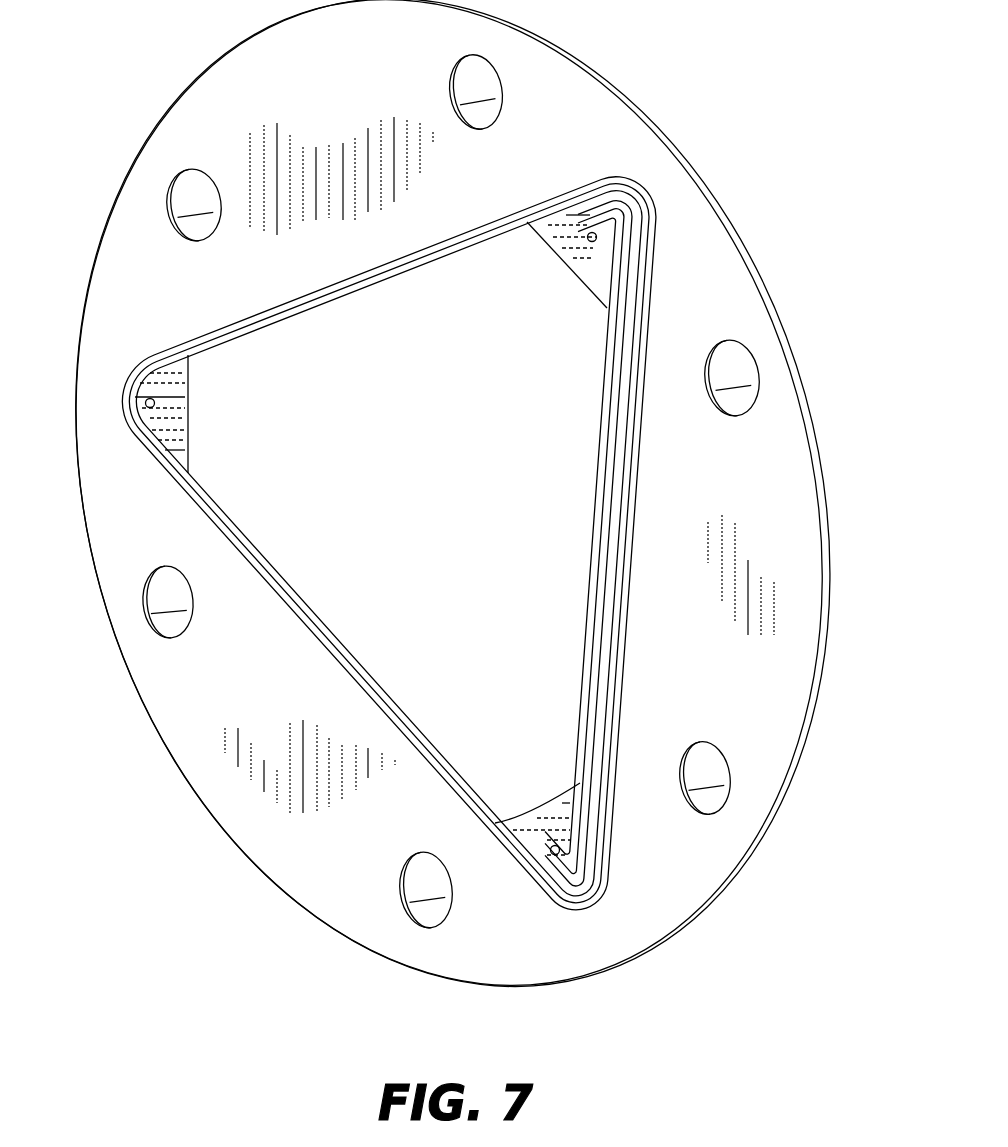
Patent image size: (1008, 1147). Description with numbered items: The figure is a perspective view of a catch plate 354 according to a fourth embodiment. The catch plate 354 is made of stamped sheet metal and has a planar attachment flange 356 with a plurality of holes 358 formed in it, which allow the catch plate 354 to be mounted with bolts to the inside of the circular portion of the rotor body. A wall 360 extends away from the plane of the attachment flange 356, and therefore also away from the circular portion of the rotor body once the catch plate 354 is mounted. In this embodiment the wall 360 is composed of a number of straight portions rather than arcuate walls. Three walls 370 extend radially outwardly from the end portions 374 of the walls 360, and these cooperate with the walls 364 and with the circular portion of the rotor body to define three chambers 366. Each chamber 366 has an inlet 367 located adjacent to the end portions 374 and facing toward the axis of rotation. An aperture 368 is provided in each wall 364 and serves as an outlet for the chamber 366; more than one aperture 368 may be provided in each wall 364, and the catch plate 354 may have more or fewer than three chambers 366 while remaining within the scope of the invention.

The catch plate 354 is at (726, 110).
The planar attachment flange 356 is at (734, 292).
The holes 358 is at (452, 491).
The wall 360 is at (340, 284).
The walls 364 is at (580, 216).
The chambers 366 is at (550, 232).
The inlet 367 is at (558, 274).
The aperture 368 is at (597, 237).
The walls 370 is at (160, 374).
The end portions 374 is at (521, 225).